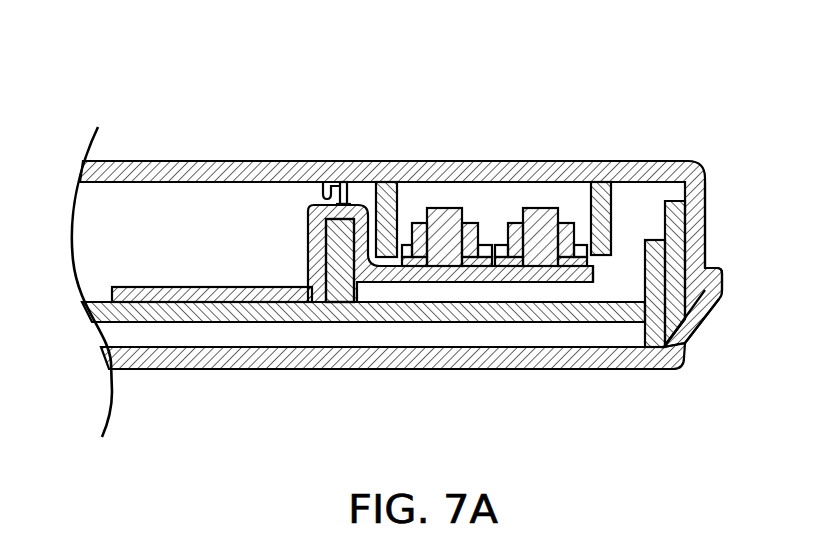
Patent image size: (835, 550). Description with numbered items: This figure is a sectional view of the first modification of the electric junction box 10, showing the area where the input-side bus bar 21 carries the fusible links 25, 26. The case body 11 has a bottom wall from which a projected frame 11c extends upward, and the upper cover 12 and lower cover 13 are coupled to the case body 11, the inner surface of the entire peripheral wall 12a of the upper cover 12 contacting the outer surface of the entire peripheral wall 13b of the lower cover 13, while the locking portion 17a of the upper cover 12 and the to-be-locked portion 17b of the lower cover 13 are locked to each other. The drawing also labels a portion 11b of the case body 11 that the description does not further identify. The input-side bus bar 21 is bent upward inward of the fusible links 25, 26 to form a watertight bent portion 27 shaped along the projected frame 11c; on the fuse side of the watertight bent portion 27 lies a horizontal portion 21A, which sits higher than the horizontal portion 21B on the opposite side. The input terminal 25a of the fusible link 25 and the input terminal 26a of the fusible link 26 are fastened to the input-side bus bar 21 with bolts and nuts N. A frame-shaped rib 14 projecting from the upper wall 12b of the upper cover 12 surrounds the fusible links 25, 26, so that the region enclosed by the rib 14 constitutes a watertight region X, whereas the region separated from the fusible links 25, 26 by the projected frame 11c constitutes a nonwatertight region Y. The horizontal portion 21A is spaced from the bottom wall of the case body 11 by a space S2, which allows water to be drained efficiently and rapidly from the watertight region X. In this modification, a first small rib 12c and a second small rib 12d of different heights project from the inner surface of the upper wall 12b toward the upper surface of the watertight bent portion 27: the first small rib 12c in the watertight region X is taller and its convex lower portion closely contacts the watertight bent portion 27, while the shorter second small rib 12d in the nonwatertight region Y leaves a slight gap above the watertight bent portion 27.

The electric junction box 10 is at (118, 113).
The case body 11 is at (168, 323).
The end portion of first substrate 11b is at (655, 287).
The projected frame 11c is at (322, 292).
The upper cover 12 is at (676, 161).
The entire peripheral wall 12a is at (706, 208).
The upper wall 12b is at (337, 182).
The first small rib 12c is at (388, 182).
The second small rib 12d is at (325, 182).
The lower cover 13 is at (517, 356).
The entire peripheral wall 13b is at (674, 266).
The frame-shaped rib 14 is at (416, 222).
The locking portion 17a is at (712, 314).
The to-be-locked portion 17b is at (718, 297).
The input-side bus bar 21 is at (142, 284).
The horizontal portion 21A is at (391, 283).
The horizontal portion 21B is at (203, 287).
The fusible link 25 is at (487, 245).
The input terminal 25a is at (483, 283).
The fusible link 26 is at (499, 245).
The input terminal 26a is at (593, 283).
The watertight bent portion 27 is at (308, 212).
The nut N is at (573, 240).
The space S2 is at (437, 290).
The watertight region X is at (540, 200).
The nonwatertight region Y is at (240, 218).